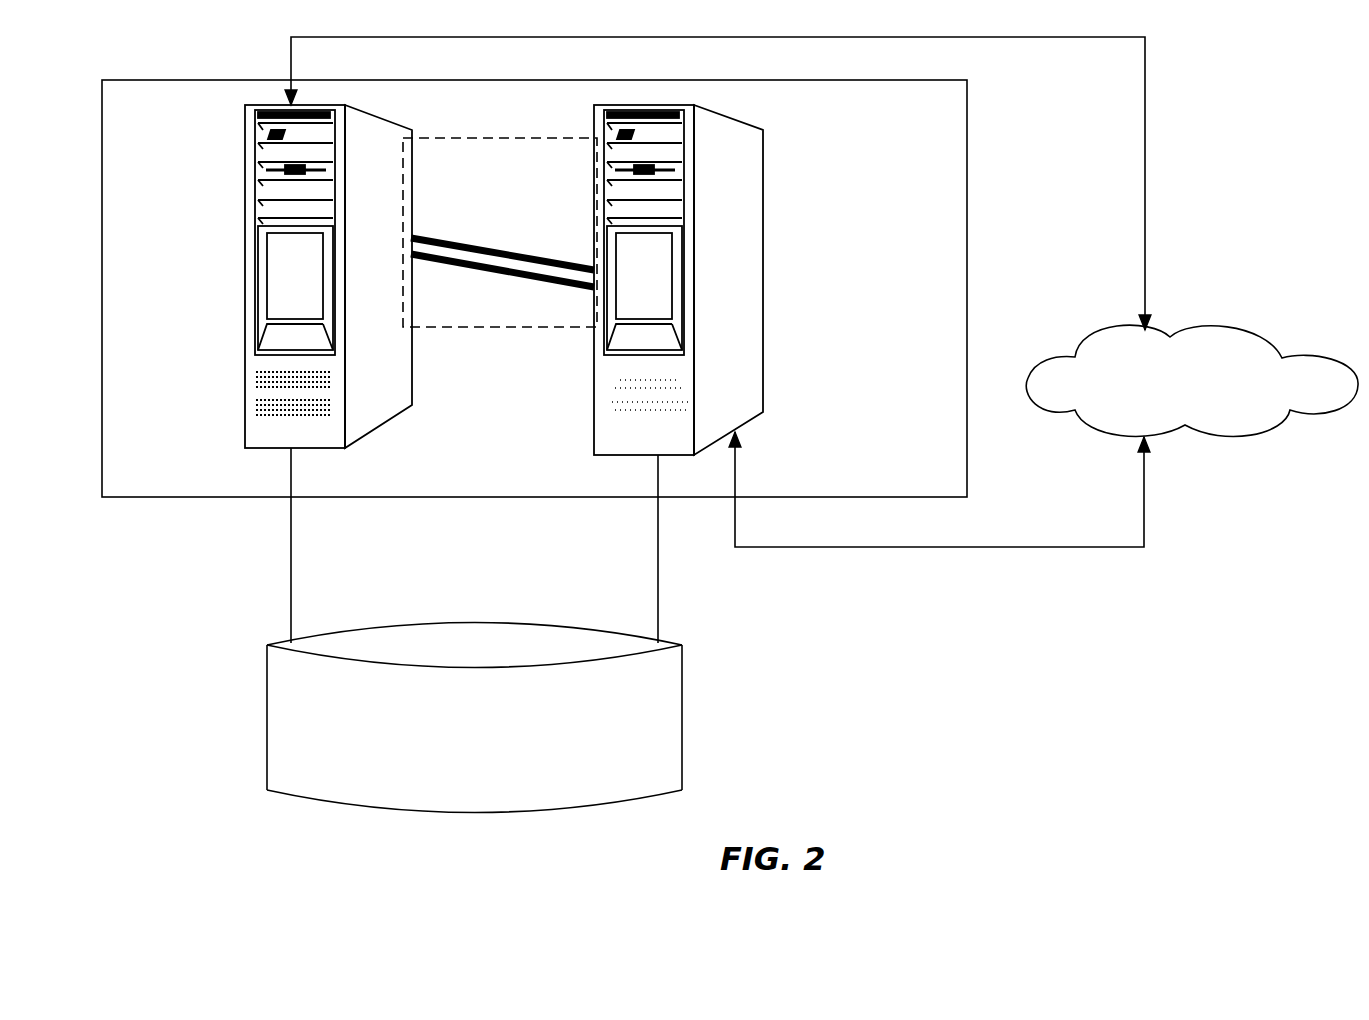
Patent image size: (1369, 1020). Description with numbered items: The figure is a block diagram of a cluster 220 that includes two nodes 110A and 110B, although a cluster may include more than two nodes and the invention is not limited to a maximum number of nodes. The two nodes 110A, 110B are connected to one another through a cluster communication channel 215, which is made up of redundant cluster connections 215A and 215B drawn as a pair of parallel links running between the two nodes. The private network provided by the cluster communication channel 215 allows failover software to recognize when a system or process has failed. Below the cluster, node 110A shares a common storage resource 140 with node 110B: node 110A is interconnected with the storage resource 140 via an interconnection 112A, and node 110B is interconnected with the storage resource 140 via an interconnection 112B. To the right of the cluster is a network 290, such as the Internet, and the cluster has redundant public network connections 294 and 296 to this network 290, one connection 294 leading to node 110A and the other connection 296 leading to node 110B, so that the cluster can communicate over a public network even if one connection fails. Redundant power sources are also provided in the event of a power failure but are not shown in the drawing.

The node 110A is at (243, 170).
The node 110B is at (763, 165).
The interconnection 112A is at (290, 582).
The interconnection 112B is at (660, 602).
The common storage resource 140 is at (474, 718).
The cluster communication channel 215 is at (482, 316).
The redundant cluster connection 215A is at (440, 240).
The redundant cluster connection 215B is at (497, 275).
The cluster 220 is at (190, 497).
The network 290 is at (1192, 380).
The public network connection 294 is at (1148, 248).
The public network connection 296 is at (988, 545).